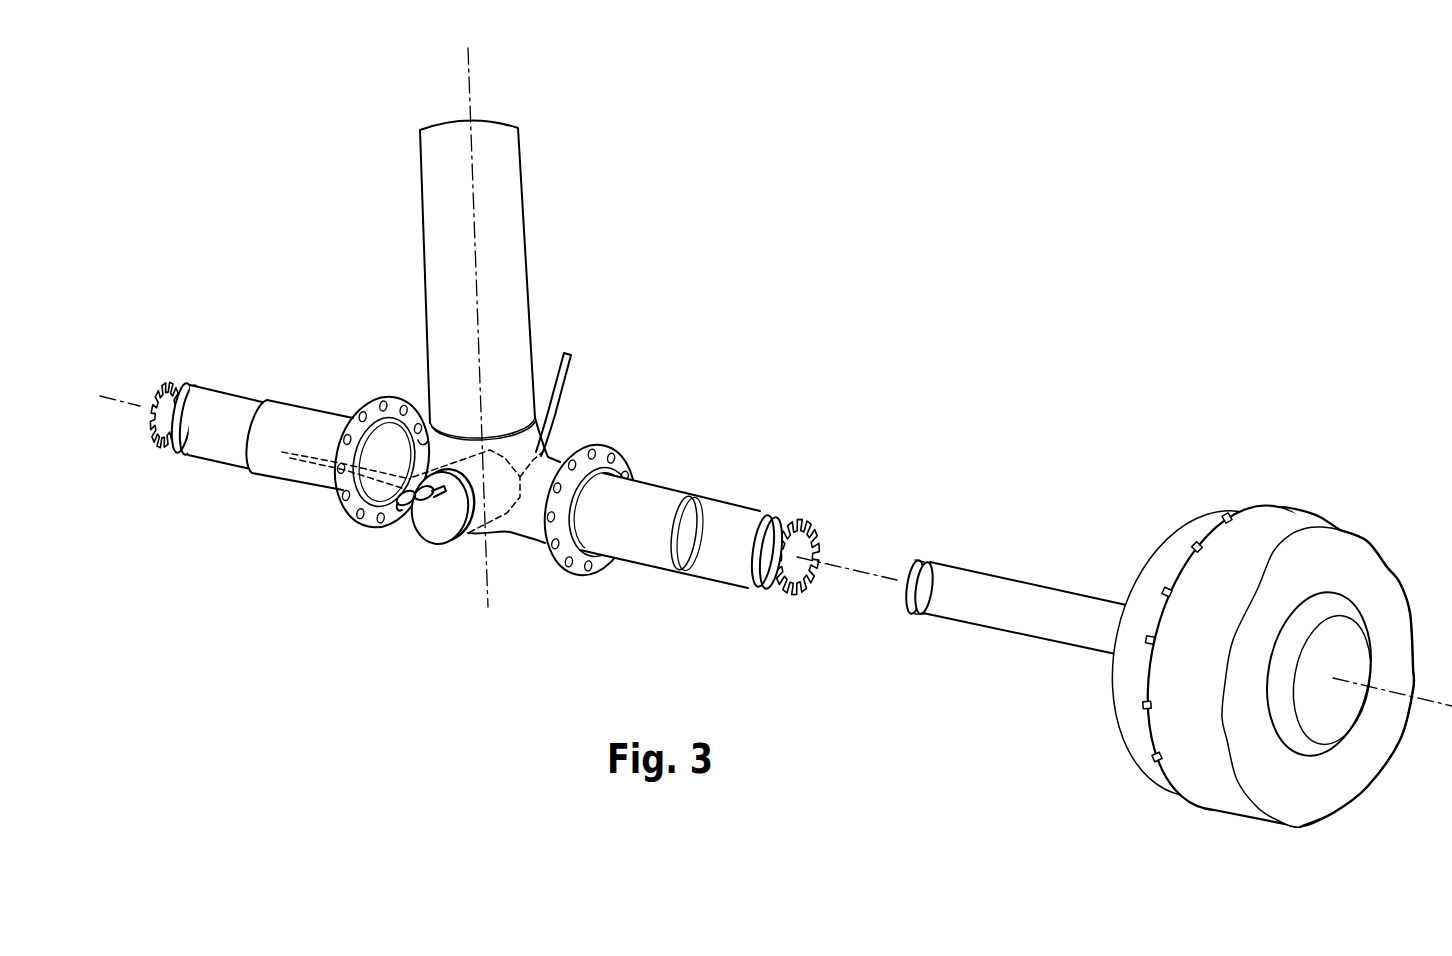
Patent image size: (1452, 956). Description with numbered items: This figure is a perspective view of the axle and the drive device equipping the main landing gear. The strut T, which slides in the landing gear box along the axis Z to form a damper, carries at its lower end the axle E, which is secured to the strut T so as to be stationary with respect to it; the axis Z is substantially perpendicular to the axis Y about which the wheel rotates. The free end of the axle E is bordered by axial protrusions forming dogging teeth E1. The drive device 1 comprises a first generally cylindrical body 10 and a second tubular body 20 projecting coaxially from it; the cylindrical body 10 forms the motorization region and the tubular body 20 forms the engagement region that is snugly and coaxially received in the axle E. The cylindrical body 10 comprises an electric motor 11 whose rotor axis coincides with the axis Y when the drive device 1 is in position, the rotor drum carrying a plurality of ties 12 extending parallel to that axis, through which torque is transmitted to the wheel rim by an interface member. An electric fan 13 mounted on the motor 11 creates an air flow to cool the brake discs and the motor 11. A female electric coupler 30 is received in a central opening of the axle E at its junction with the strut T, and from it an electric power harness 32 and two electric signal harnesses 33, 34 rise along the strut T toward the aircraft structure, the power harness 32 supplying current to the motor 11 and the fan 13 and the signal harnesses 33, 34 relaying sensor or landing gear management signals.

The drive device 1 is at (1237, 602).
The first generally cylindrical body 10 is at (1140, 748).
The electric motor 11 is at (1241, 658).
The ties 12 is at (1165, 590).
The electric fan 13 is at (1287, 528).
The second tubular body 20 is at (1010, 636).
The female electric coupler 30 is at (442, 537).
The electric power harness 32 is at (571, 378).
The electric signal harness 33 is at (407, 514).
The electric signal harness 34 is at (373, 528).
The strut T is at (530, 257).
The axle E is at (666, 568).
The dogging teeth E1 is at (812, 538).
The axis Z is at (470, 62).
The axis Y is at (774, 583).